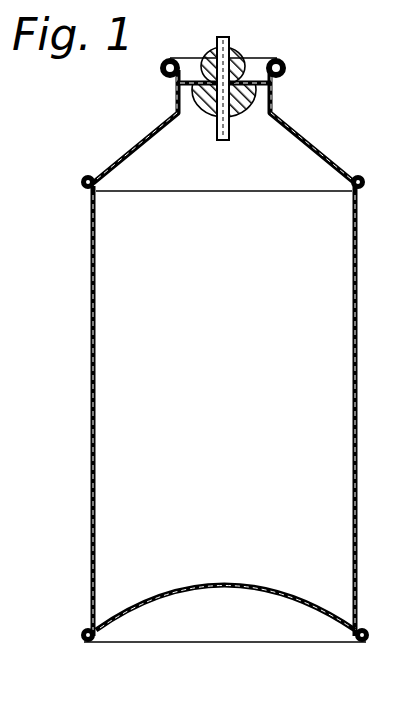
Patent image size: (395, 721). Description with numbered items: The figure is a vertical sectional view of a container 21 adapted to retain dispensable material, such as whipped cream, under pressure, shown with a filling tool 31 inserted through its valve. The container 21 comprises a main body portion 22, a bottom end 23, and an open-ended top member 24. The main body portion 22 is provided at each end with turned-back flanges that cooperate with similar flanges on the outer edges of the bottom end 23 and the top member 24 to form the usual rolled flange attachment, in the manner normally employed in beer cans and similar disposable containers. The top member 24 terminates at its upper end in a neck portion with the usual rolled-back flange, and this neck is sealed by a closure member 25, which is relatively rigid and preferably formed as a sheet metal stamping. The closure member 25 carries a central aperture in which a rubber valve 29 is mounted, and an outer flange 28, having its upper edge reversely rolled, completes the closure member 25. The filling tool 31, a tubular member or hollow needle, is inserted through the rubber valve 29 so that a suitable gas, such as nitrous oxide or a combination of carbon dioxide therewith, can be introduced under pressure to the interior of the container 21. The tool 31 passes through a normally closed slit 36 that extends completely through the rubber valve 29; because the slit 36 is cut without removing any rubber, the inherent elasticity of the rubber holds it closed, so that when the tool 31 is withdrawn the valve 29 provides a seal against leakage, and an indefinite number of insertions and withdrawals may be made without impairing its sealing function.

The container 21 is at (117, 360).
The main body portion 22 is at (92, 490).
The bottom end 23 is at (253, 625).
The open-ended top member 24 is at (133, 157).
The closure member 25 is at (265, 55).
The outer flange 28 is at (160, 70).
The rubber valve 29 is at (246, 110).
The filling tool 31 is at (216, 47).
The slit 36 is at (202, 97).